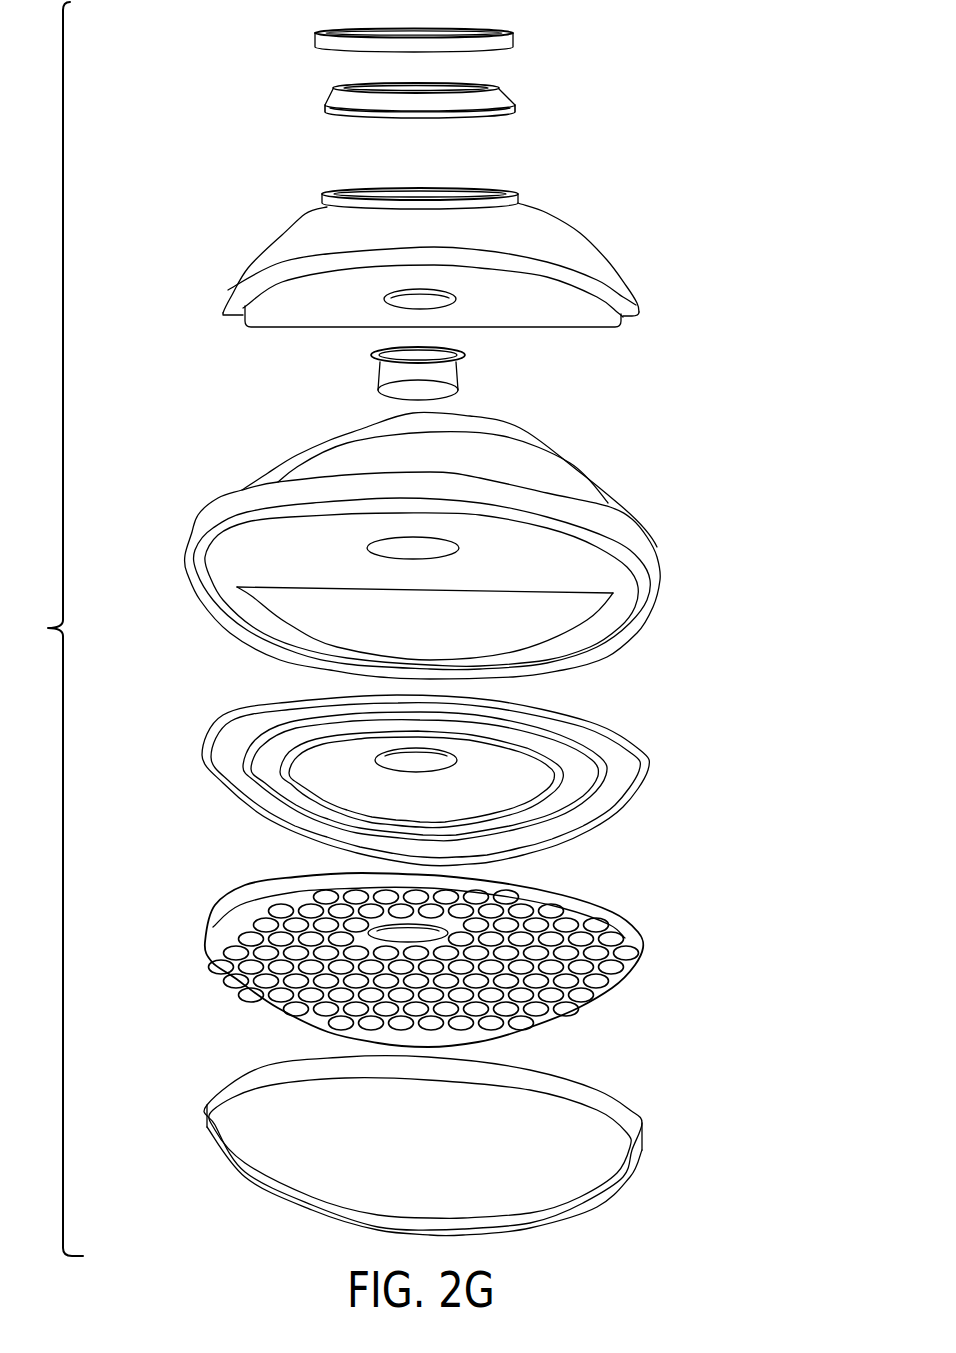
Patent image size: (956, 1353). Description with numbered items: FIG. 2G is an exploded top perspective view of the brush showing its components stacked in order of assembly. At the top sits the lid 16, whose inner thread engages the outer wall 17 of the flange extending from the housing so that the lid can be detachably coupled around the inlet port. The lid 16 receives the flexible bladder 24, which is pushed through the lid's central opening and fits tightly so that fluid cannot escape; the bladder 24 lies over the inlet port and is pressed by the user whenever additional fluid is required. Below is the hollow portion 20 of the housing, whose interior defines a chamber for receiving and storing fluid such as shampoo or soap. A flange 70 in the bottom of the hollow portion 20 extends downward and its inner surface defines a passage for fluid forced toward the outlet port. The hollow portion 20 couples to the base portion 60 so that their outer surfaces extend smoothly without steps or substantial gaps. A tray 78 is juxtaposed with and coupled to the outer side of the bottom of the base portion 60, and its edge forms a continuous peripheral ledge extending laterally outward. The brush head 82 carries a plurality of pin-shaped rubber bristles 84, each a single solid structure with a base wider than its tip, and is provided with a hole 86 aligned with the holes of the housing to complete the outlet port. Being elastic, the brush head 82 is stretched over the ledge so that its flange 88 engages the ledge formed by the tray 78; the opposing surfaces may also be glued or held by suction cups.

The lid 16 is at (313, 42).
The bladder 24 is at (328, 101).
The outer wall 17 is at (327, 191).
The hollow portion 20 is at (572, 240).
The flange 70 is at (377, 378).
The base portion 60 is at (208, 585).
The tray 78 is at (242, 787).
The brush head 82 is at (400, 944).
The bristles 84 is at (240, 975).
The hole 86 is at (407, 930).
The flange 88 is at (212, 1138).